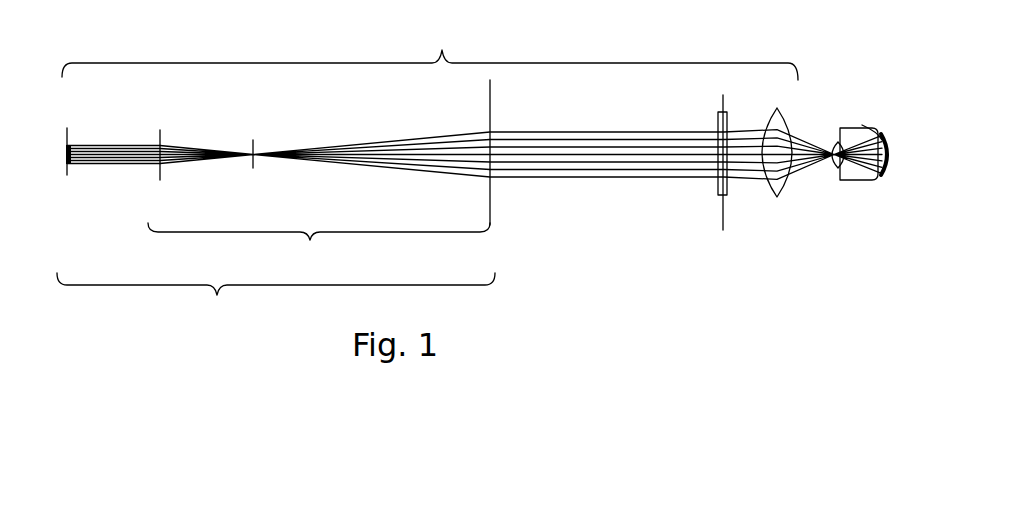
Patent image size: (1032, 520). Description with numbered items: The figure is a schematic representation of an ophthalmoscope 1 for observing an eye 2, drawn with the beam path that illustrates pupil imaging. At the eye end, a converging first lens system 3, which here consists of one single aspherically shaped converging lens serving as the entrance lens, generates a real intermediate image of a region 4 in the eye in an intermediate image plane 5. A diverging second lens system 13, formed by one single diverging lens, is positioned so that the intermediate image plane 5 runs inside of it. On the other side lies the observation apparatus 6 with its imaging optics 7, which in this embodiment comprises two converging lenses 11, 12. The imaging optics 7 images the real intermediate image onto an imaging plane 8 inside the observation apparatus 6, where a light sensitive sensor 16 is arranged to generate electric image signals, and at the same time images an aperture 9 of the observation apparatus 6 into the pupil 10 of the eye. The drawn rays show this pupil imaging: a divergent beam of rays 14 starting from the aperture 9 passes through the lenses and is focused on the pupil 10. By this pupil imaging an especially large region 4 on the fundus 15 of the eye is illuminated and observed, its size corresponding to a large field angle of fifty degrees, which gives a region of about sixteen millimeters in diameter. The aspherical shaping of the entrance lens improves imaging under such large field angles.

The ophthalmoscope 1 is at (430, 45).
The eye 2 is at (855, 181).
The converging first lens system 3 is at (778, 197).
The region in the eye 4 is at (887, 143).
The intermediate image plane 5 is at (721, 227).
The observation apparatus 6 is at (276, 306).
The imaging optics 7 is at (319, 249).
The imaging plane 8 is at (68, 172).
The aperture 9 is at (255, 168).
The eye pupil 10 is at (831, 142).
The converging lens 11 is at (493, 103).
The converging lens 12 is at (160, 130).
The diverging second lens system 13 is at (718, 195).
The divergent beam of rays 14 is at (387, 142).
The fundus 15 is at (862, 125).
The light sensitive sensor 16 is at (63, 148).